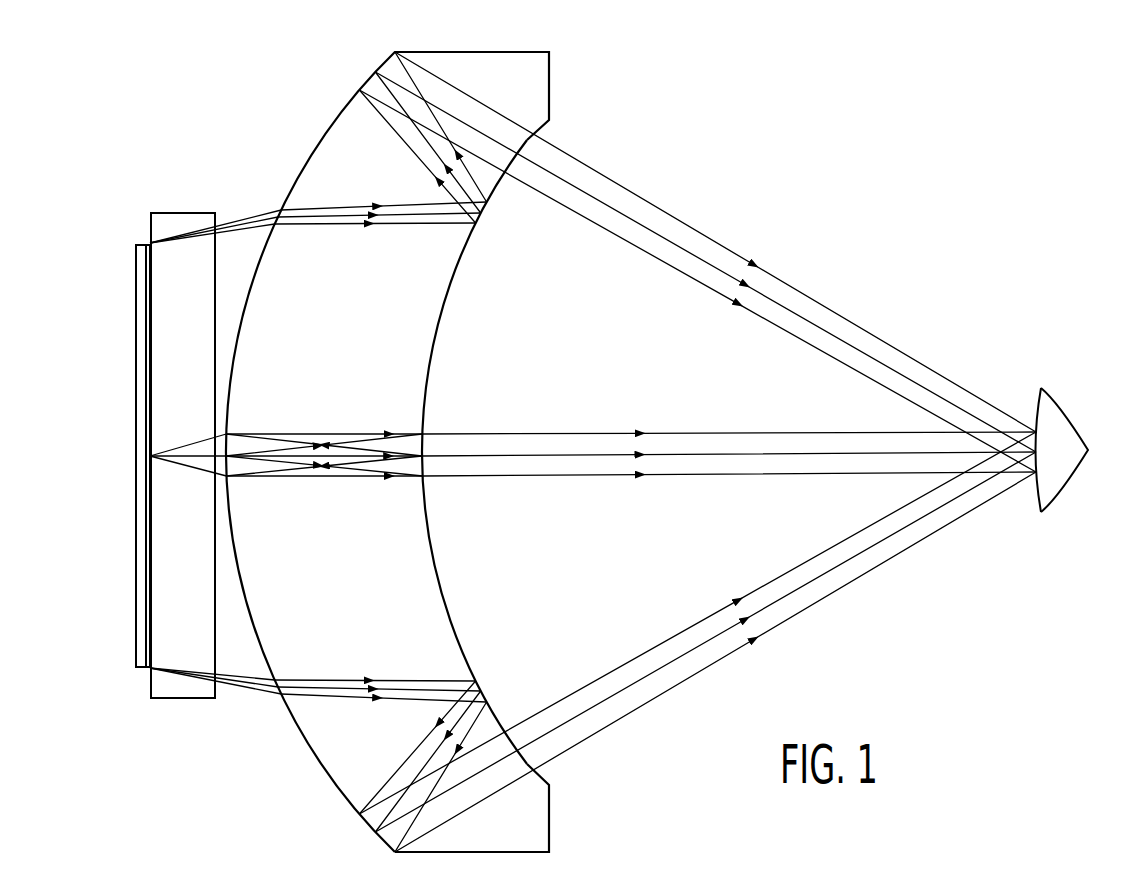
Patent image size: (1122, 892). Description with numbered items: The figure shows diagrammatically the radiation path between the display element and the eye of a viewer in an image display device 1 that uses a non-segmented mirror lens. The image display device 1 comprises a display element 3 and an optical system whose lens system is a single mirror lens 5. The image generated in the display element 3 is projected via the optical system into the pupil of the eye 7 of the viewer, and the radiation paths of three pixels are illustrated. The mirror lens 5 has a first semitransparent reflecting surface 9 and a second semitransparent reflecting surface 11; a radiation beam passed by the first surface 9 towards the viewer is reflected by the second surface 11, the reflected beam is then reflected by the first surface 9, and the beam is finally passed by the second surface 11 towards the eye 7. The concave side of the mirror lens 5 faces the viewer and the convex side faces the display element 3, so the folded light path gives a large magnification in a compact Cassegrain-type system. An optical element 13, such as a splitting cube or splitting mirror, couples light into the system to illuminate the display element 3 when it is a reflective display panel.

The image display device 1 is at (102, 788).
The display element 3 is at (140, 593).
The mirror lens 5 is at (518, 828).
The eye 7 is at (1055, 455).
The first semitransparent reflecting surface 9 is at (343, 795).
The second semitransparent reflecting surface 11 is at (495, 712).
The optical element 13 is at (186, 690).